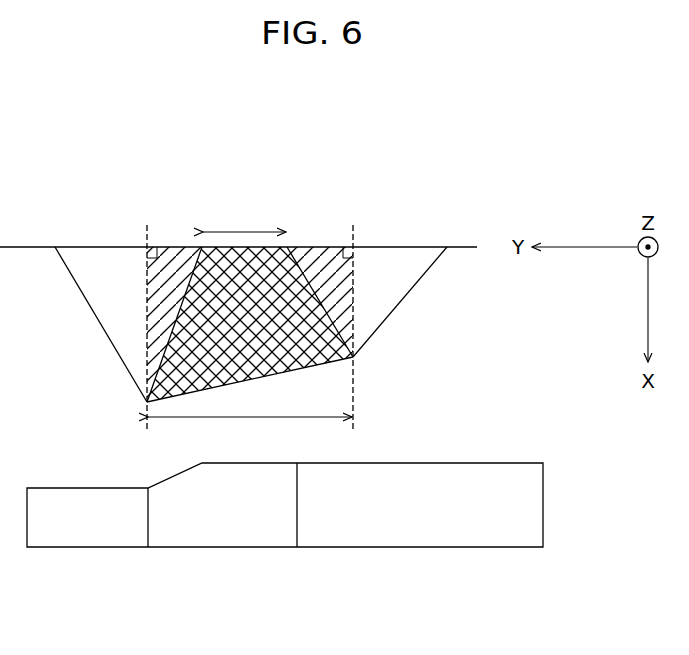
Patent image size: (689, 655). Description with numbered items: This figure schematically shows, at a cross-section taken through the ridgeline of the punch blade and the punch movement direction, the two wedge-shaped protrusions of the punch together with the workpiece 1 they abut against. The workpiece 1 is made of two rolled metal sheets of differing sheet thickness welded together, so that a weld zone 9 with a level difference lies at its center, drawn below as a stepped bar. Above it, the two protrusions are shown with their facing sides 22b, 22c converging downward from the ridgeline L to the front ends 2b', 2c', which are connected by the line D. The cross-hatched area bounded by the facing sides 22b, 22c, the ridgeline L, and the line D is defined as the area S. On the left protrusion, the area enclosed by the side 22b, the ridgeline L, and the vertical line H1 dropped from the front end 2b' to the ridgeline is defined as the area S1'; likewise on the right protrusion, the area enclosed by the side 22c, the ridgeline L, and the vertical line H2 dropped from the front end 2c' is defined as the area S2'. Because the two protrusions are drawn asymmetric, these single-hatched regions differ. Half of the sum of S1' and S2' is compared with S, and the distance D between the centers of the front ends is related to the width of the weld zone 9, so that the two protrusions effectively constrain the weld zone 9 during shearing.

The side of protrusion facing the other protrusion 22b is at (172, 300).
The side of protrusion facing the other protrusion 22c is at (320, 300).
The front end of protrusion 2b' is at (88, 350).
The front end of protrusion 2c' is at (412, 325).
The area of cross-section of left protrusion S1' is at (140, 294).
The area of cross-section of right protrusion S2' is at (364, 294).
The area surrounded by facing sides, ridgeline and line connecting front ends S is at (238, 326).
The ridgeline L is at (244, 218).
The line connecting front ends of the two protrusions D is at (250, 405).
The vertical line from front end of left protrusion to ridgeline H1 is at (147, 310).
The vertical line from front end of right protrusion to ridgeline H2 is at (353, 287).
The weld zone 9 is at (222, 537).
The workpiece 1 is at (460, 538).